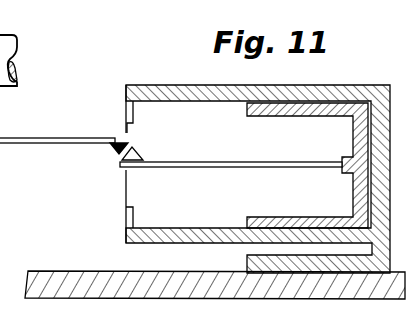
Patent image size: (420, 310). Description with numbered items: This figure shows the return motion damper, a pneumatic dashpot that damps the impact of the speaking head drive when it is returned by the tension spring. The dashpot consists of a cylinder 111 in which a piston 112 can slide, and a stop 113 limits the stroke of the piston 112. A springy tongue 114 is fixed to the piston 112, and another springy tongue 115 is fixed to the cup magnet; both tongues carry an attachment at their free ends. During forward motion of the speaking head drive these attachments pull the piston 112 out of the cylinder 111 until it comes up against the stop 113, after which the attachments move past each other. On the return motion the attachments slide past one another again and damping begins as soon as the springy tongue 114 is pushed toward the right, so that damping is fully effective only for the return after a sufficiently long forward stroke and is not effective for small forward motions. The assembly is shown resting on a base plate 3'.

The cylinder 111 is at (171, 93).
The piston 112 is at (312, 110).
The stop 113 is at (128, 115).
The springy tongue 114 is at (191, 161).
The springy tongue 115 is at (1, 137).
The base plate 3' is at (215, 271).